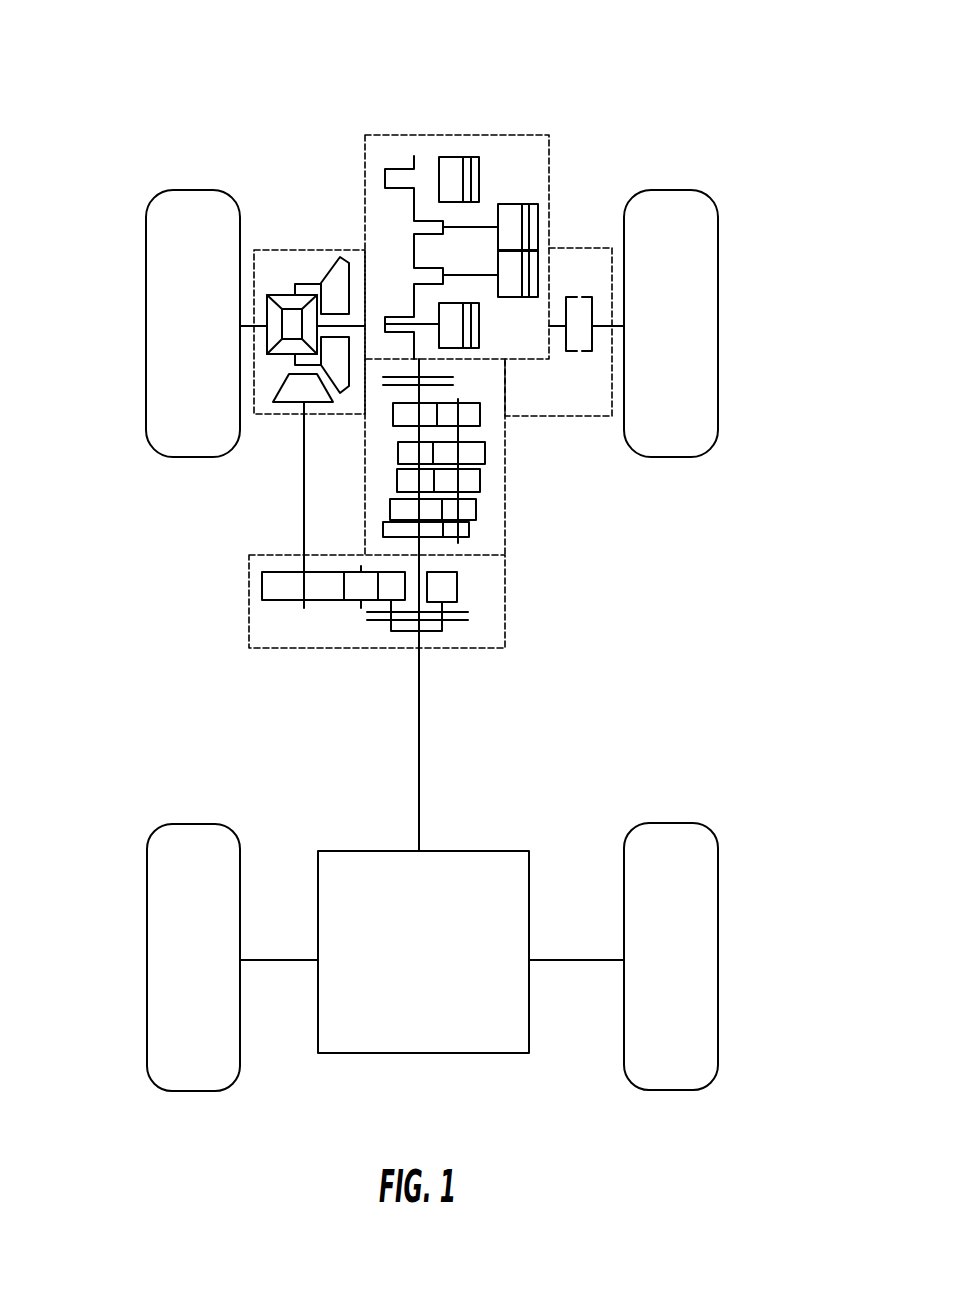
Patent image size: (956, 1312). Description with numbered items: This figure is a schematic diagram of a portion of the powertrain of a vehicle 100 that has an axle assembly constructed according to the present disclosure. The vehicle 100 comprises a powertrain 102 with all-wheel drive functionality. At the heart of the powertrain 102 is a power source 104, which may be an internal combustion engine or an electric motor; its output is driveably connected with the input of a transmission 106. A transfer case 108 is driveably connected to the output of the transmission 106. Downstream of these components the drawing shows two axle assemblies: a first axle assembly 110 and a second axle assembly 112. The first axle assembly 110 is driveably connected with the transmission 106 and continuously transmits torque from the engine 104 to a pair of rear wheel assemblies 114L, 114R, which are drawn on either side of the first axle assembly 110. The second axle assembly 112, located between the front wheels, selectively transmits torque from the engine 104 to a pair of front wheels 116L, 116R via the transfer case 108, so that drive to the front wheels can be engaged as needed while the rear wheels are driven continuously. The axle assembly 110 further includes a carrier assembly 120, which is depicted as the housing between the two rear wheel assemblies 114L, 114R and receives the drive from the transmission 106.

The vehicle 100 is at (692, 78).
The powertrain 102 is at (552, 622).
The power source 104 is at (534, 158).
The transmission 106 is at (493, 513).
The transfer case 108 is at (493, 572).
The first axle assembly 110 is at (503, 765).
The second axle assembly 112 is at (284, 145).
The rear wheel assembly 114L is at (162, 854).
The rear wheel assembly 114R is at (698, 845).
The front wheel 116L is at (168, 208).
The front wheel 116R is at (706, 230).
The carrier assembly 120 is at (387, 1054).